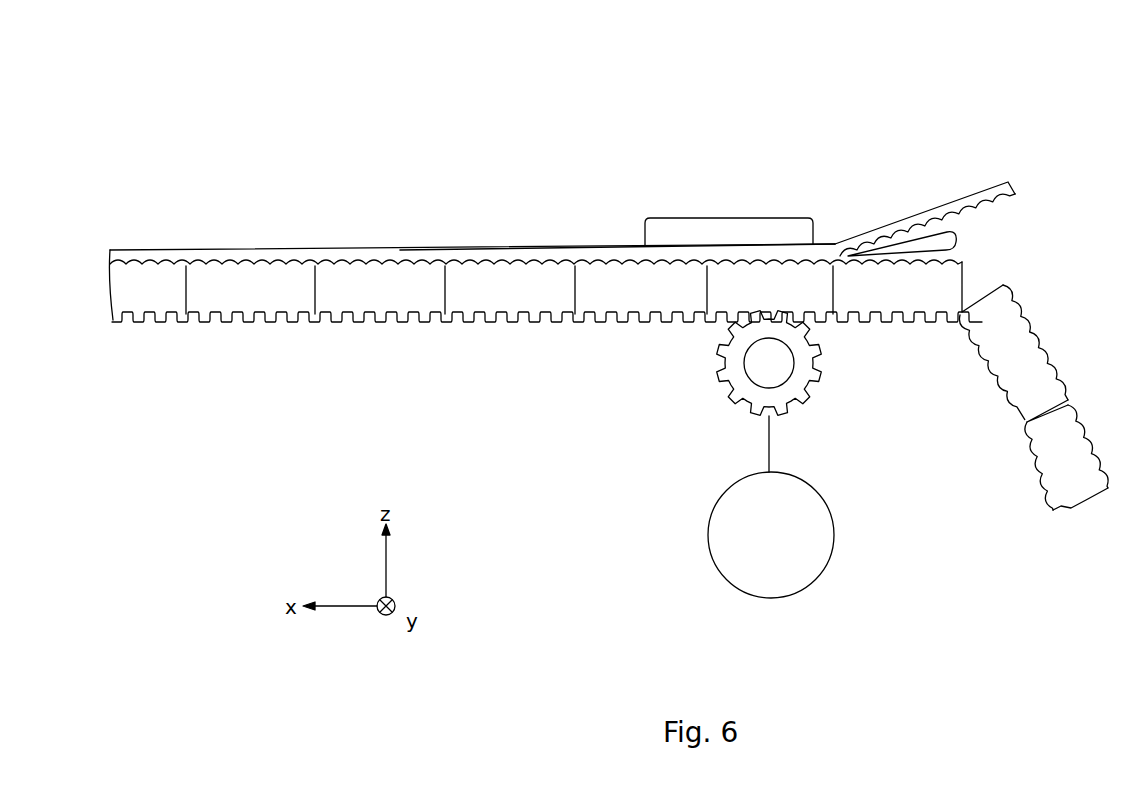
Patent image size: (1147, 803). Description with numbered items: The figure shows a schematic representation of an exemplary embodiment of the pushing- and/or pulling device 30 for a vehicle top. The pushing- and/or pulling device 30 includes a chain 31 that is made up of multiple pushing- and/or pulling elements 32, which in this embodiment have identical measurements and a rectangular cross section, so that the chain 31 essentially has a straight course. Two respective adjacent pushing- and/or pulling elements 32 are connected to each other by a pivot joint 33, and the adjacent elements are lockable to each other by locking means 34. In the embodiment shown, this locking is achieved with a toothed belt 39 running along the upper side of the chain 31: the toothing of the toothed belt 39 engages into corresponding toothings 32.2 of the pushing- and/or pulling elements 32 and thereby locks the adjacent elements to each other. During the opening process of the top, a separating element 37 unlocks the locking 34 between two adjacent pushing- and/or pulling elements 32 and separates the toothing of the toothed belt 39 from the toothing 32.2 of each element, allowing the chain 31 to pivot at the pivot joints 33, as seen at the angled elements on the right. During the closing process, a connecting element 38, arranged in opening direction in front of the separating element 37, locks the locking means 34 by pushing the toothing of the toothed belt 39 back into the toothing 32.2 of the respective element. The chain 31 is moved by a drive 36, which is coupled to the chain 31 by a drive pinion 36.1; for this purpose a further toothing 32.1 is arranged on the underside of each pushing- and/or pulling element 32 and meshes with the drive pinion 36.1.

The pushing- and/or pulling device 30 is at (901, 162).
The chain 31 is at (515, 323).
The pushing- and/or pulling element 32 is at (262, 300).
The further toothing 32.1 is at (247, 324).
The toothing 32.2 is at (248, 258).
The pivot joint 33 is at (316, 322).
The locking means 34 is at (706, 249).
The drive 36 is at (785, 543).
The drive pinion 36.1 is at (716, 370).
The separating element 37 is at (958, 239).
The connecting element 38 is at (738, 228).
The toothed belt 39 is at (468, 248).